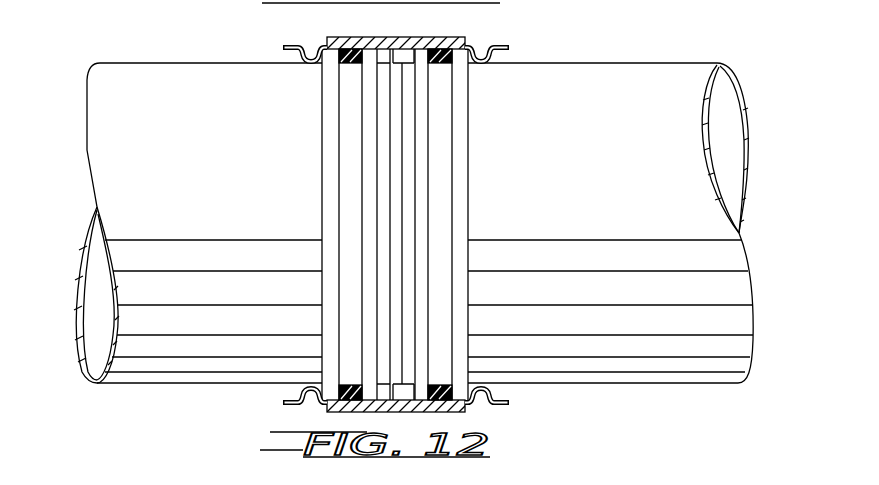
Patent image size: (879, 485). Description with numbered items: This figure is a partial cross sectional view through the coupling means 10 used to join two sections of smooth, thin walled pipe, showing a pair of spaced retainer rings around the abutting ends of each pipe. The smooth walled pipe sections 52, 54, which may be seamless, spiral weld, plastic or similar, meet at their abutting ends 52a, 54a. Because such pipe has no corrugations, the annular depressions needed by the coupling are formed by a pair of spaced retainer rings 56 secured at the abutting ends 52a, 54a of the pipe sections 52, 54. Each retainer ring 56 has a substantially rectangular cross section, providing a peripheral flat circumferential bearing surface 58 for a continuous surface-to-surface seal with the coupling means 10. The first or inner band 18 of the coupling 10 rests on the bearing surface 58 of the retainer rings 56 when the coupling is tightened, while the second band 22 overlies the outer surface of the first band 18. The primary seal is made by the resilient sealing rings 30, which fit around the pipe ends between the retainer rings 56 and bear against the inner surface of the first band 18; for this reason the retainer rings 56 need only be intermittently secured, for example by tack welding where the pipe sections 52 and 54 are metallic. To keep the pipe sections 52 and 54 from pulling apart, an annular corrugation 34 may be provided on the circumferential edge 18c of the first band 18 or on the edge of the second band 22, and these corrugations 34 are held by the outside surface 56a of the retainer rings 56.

The coupling means 10 is at (341, 35).
The first band 18 is at (320, 44).
The circumferential edge 18c is at (283, 47).
The second band 22 is at (463, 43).
The resilient rings 30 is at (360, 52).
The annular corrugation 34 is at (308, 45).
The pipe section 52 is at (215, 63).
The abutting end 52a is at (345, 173).
The pipe section 54 is at (677, 67).
The abutting end 54a is at (443, 165).
The retainer ring 56 is at (467, 71).
The outside surface 56a is at (497, 62).
The bearing surface 58 is at (426, 50).